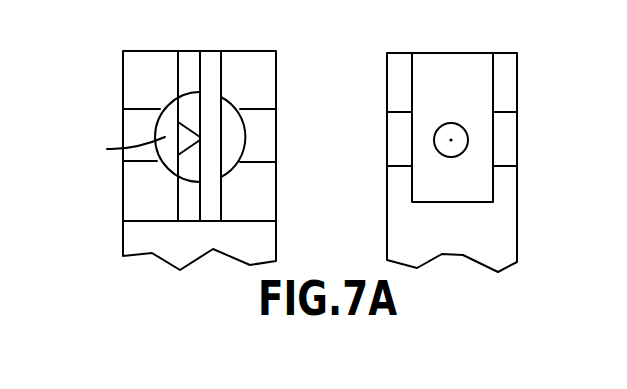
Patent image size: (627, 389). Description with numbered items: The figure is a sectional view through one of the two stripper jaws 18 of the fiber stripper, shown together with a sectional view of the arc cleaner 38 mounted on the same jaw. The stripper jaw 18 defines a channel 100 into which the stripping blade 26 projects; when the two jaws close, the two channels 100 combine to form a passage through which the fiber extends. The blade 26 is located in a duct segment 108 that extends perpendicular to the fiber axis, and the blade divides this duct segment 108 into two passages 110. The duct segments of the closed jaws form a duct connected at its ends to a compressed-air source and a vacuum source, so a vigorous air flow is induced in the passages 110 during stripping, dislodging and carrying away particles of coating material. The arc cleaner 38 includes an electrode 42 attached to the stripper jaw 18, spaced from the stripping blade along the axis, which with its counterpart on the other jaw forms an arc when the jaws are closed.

The stripper jaw 18 is at (277, 67).
The channel 100 is at (133, 120).
The stripping blade 26 is at (180, 169).
The duct segment 108 is at (245, 132).
The passage 110 is at (233, 145).
The arc cleaner 38 is at (517, 72).
The electrode 42 is at (452, 123).